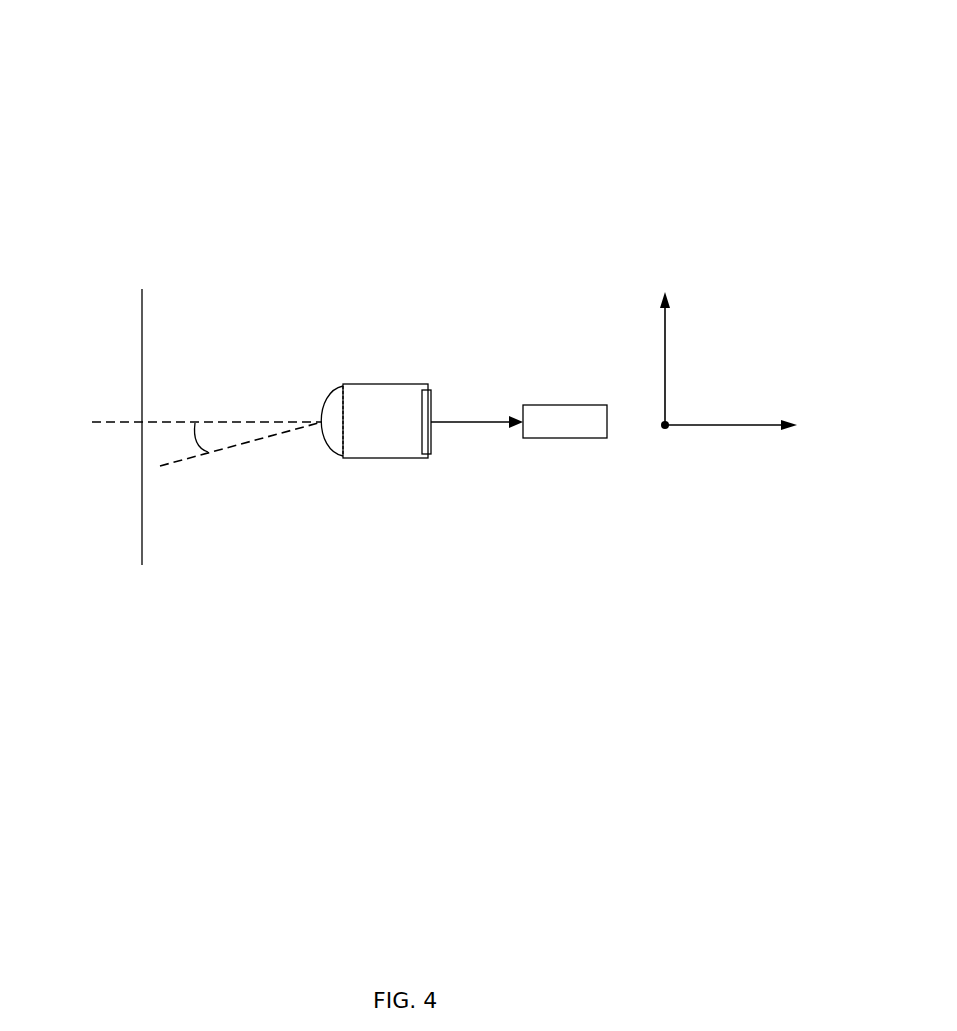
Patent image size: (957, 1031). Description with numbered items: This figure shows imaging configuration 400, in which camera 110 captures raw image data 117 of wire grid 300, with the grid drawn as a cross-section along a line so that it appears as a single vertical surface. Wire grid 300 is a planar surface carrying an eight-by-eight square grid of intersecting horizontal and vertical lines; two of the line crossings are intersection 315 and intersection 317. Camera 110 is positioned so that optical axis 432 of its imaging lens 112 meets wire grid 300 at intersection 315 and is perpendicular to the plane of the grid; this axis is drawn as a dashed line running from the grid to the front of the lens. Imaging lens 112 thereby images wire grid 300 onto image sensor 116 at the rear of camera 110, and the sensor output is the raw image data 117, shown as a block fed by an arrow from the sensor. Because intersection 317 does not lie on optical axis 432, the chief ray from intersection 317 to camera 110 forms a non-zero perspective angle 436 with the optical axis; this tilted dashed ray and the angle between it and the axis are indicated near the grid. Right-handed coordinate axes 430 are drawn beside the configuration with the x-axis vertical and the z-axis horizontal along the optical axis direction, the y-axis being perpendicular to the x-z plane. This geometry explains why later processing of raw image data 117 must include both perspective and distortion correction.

The imaging configuration 400 is at (137, 60).
The wire grid 300 is at (142, 550).
The intersection 315 is at (141, 418).
The intersection 317 is at (142, 472).
The optical axis 432 is at (241, 418).
The perspective angle 436 is at (208, 452).
The camera 110 is at (352, 478).
The imaging lens 112 is at (343, 384).
The image sensor 116 is at (427, 388).
The raw image data 117 is at (519, 421).
The right-handed coordinate axes 430 is at (748, 310).